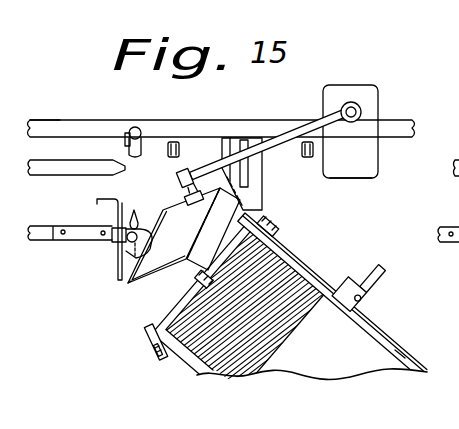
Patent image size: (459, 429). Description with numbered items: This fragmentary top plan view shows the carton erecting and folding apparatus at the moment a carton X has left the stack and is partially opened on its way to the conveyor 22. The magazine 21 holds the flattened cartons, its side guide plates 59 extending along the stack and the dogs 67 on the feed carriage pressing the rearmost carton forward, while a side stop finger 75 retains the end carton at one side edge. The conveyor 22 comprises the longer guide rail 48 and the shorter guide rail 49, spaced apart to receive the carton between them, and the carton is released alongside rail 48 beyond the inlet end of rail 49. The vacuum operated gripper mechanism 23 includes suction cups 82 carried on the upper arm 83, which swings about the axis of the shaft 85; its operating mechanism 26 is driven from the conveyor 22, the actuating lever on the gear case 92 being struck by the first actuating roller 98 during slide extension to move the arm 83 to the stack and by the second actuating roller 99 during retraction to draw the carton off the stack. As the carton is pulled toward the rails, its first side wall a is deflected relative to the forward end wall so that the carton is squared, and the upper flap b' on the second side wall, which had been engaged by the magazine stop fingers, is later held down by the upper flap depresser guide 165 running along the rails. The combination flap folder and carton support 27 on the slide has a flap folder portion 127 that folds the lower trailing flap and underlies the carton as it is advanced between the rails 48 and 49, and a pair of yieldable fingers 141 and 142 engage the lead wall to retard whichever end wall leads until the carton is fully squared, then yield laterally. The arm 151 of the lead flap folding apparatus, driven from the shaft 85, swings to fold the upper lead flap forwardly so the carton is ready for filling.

The magazine 21 is at (385, 324).
The conveyor 22 is at (70, 113).
The vacuum operated gripper mechanism 23 is at (178, 173).
The operating mechanism 26 is at (358, 187).
The combination flap folder and carton support 27 is at (272, 194).
The guide rail 48 is at (42, 119).
The guide rail 49 is at (41, 242).
The side guide plate 59 is at (393, 353).
The dog 67 is at (337, 312).
The side stop finger 75 is at (147, 342).
The suction cup 82 is at (184, 200).
The upper arm 83 is at (282, 133).
The shaft 85 is at (352, 101).
The gear case 92 is at (370, 158).
The first actuating roller 98 is at (302, 154).
The second actuating roller 99 is at (182, 148).
The flap folder portion 127 is at (212, 162).
The yieldable finger 141 is at (134, 209).
The yieldable finger 142 is at (126, 120).
The arm 151 is at (110, 199).
The upper flap depresser guide 165 is at (50, 176).
The first side wall a is at (159, 223).
The upper flap b' is at (191, 247).
The carton X is at (128, 284).